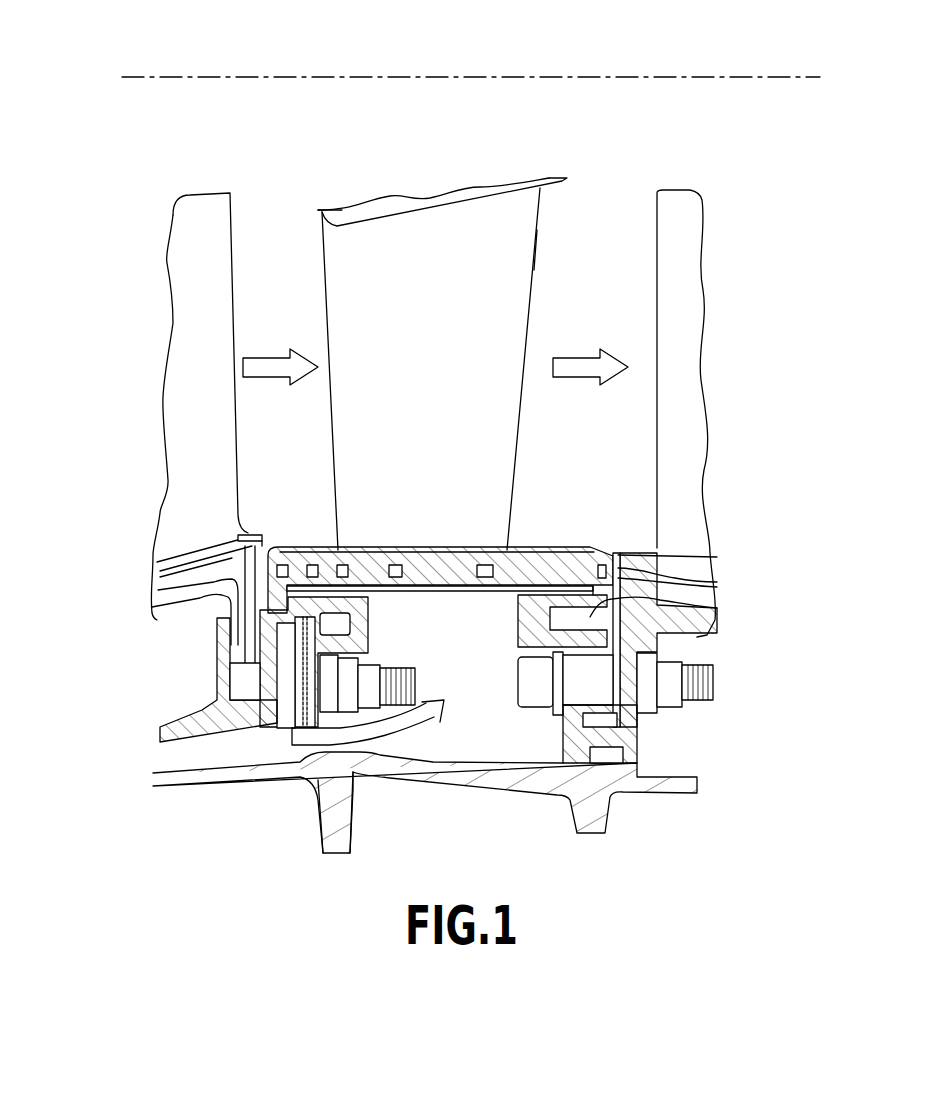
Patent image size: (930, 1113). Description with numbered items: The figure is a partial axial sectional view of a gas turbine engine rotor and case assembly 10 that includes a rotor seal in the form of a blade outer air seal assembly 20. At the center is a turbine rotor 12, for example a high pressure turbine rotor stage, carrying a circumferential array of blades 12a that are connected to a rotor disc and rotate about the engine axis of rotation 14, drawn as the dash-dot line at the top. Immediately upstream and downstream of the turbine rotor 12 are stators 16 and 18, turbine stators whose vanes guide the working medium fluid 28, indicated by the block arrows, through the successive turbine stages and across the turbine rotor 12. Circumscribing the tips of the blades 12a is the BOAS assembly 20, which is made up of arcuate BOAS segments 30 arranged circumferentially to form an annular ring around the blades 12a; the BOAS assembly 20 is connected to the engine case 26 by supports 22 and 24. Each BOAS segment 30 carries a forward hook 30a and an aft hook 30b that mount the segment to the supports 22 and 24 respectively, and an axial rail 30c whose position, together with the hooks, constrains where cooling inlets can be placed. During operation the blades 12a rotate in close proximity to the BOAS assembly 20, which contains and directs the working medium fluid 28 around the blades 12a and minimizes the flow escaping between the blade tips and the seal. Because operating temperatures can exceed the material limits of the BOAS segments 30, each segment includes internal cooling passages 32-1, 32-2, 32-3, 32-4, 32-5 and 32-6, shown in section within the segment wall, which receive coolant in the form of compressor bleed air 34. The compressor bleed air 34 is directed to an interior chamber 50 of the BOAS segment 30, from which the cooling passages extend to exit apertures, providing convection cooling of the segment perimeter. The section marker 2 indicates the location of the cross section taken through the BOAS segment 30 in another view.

The gas turbine engine rotor and case assembly 10 is at (237, 817).
The turbine rotor 12 is at (497, 178).
The blades 12a is at (535, 250).
The engine axis of rotation 14 is at (282, 76).
The stator 16 is at (177, 363).
The stator 18 is at (700, 358).
The blade outer air seal assembly 20 is at (616, 550).
The support 22 is at (350, 617).
The support 24 is at (718, 608).
The case 26 is at (667, 777).
The working medium fluid 28 is at (265, 354).
The BOAS segment 30 is at (718, 583).
The forward hook 30a is at (355, 640).
The aft hook 30b is at (530, 637).
The axial rail 30c is at (588, 545).
The internal cooling passage 32-1 is at (283, 563).
The internal cooling passage 32-2 is at (312, 563).
The internal cooling passage 32-3 is at (342, 563).
The internal cooling passage 32-4 is at (396, 563).
The internal cooling passage 32-5 is at (483, 563).
The internal cooling passage 32-6 is at (600, 563).
The compressor bleed air 34 is at (400, 732).
The interior chamber 50 is at (487, 694).
The section line 2- 2 is at (153, 562).